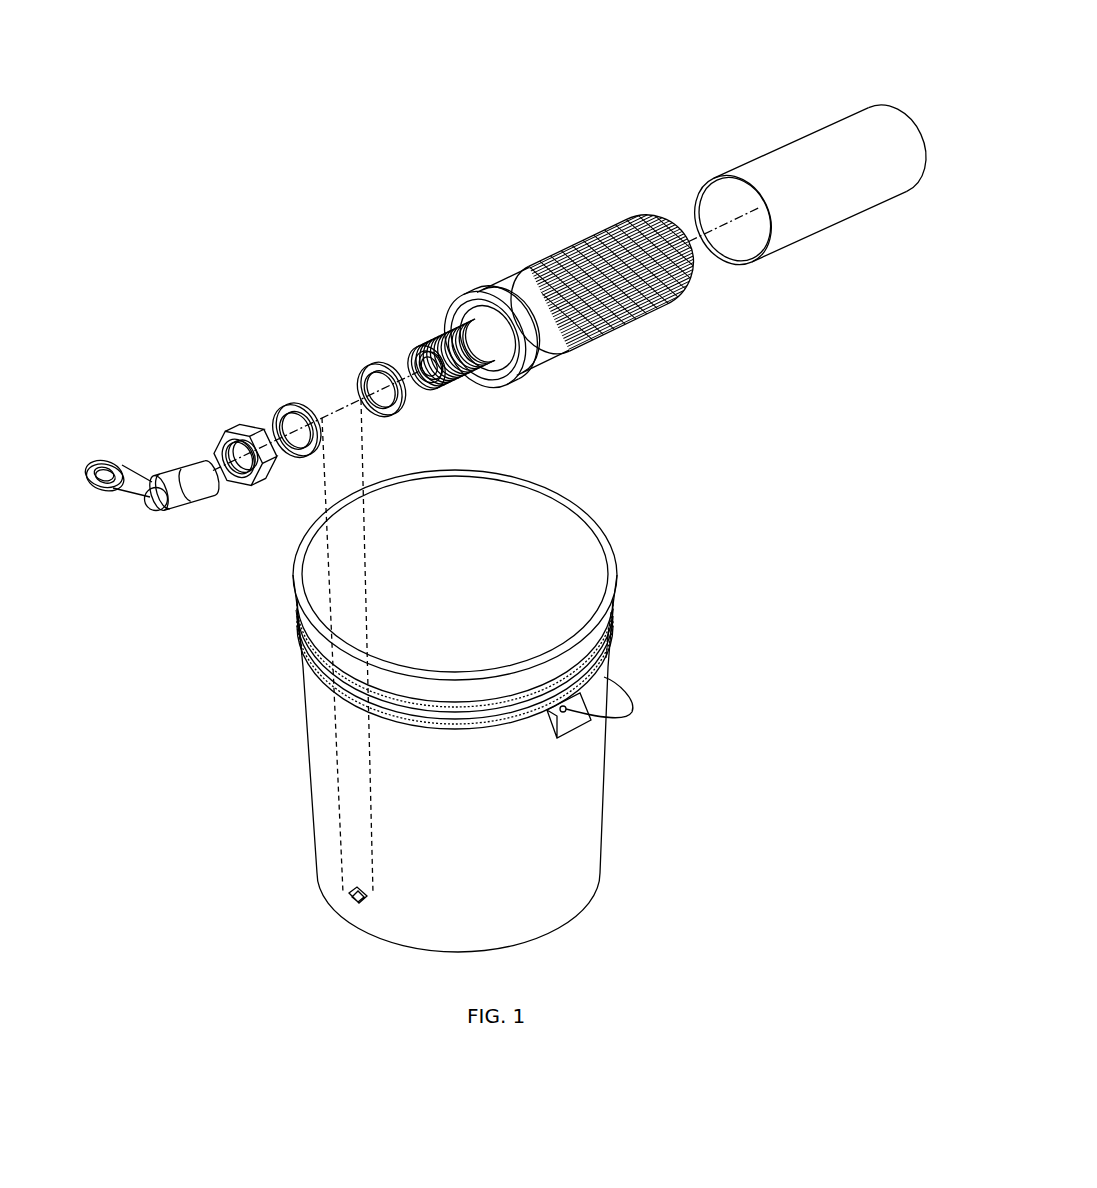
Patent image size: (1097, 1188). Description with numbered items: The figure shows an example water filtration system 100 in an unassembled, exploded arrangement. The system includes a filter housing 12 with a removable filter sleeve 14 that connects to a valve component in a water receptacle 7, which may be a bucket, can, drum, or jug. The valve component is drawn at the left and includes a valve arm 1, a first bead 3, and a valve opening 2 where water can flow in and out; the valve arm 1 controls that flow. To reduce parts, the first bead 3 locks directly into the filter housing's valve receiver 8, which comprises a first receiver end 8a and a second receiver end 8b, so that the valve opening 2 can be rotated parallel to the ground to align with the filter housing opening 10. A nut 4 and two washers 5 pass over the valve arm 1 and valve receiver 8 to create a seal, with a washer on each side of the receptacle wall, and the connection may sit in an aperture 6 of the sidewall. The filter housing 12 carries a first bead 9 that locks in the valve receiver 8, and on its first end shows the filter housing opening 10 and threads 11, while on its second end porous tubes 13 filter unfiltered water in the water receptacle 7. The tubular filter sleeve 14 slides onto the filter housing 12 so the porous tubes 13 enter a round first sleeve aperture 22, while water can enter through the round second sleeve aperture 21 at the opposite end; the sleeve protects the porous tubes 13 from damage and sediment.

The water filtration system 100 is at (308, 226).
The valve arm 1 is at (106, 458).
The valve opening 2 is at (182, 460).
The first bead 3 is at (182, 505).
The nut 4 is at (235, 428).
The washers 5 is at (282, 402).
The aperture 6 is at (345, 893).
The water receptacle 7 is at (310, 847).
The valve receiver 8 is at (430, 338).
The first receiver end 8a is at (447, 367).
The second receiver end 8b is at (487, 362).
The first bead 9 is at (430, 385).
The filter housing opening 10 is at (434, 376).
The threads 11 is at (458, 322).
The filter housing 12 is at (474, 303).
The porous tubes 13 is at (576, 244).
The filter sleeve 14 is at (795, 135).
The second sleeve aperture 21 is at (813, 158).
The first sleeve aperture 22 is at (738, 238).